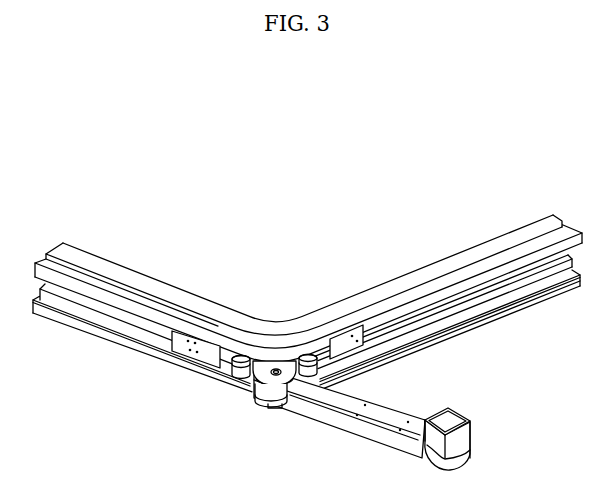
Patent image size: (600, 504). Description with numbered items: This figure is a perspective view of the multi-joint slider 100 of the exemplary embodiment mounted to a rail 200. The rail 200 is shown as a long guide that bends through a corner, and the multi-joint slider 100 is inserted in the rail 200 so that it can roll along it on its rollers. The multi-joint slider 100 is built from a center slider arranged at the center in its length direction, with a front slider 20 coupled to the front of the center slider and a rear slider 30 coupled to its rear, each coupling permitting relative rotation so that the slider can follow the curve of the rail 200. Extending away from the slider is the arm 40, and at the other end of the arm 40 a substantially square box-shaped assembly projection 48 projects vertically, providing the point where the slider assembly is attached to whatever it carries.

The rail 200 is at (333, 313).
The front slider 20 is at (349, 357).
The rear slider 30 is at (212, 360).
The arm 40 is at (353, 428).
The assembly projection 48 is at (470, 419).
The multi-joint slider 100 is at (246, 414).